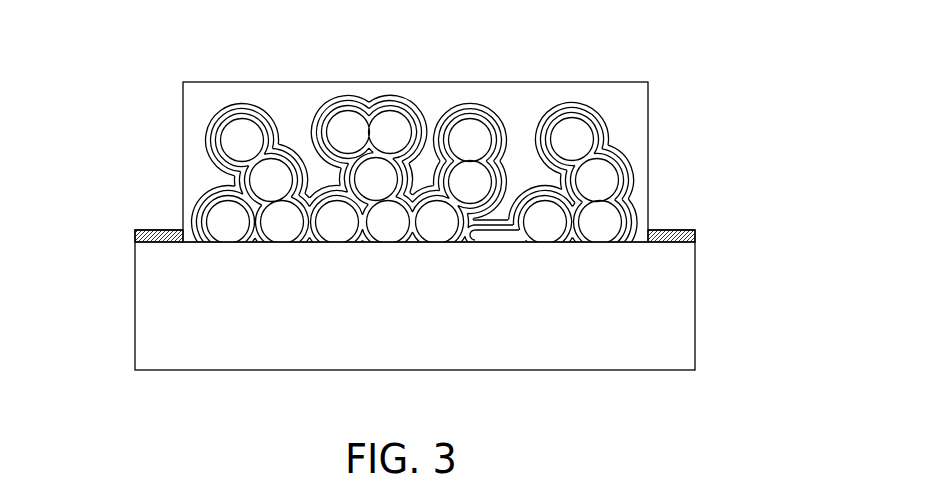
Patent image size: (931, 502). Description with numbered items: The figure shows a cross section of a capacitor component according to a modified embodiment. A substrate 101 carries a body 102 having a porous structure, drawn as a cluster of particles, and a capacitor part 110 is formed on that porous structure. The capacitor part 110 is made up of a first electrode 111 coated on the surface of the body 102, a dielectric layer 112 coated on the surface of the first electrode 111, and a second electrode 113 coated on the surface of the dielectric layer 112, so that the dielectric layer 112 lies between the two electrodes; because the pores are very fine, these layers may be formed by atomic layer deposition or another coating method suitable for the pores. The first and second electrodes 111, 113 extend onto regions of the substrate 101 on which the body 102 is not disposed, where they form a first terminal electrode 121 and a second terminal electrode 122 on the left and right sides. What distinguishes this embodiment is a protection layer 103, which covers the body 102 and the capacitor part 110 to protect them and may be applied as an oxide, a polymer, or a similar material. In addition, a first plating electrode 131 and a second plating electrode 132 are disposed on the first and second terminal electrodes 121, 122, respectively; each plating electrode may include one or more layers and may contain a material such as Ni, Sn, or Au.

The substrate 101 is at (148, 307).
The body 102 is at (203, 121).
The protection layer 103 is at (520, 81).
The capacitor part 110 is at (739, 80).
The first electrode 111 is at (617, 160).
The dielectric layer 112 is at (605, 136).
The second electrode 113 is at (603, 114).
The first terminal electrode 121 is at (136, 237).
The second terminal electrode 122 is at (694, 240).
The first plating electrode 131 is at (155, 231).
The second plating electrode 132 is at (683, 229).